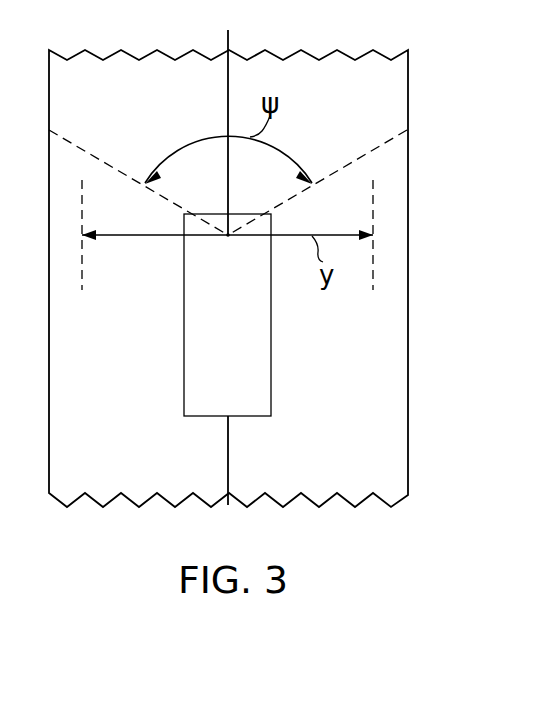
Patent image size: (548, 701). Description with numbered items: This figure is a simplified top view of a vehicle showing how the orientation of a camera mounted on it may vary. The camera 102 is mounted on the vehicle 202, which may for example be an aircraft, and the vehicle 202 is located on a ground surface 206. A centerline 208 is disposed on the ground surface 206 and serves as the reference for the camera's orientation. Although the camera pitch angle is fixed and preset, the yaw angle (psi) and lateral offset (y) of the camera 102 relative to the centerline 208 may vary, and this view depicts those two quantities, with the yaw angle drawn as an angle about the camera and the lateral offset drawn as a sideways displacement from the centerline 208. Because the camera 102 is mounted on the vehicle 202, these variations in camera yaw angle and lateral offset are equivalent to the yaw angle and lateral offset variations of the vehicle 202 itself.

The camera 102 is at (228, 238).
The vehicle 202 is at (262, 372).
The ground surface 206 is at (392, 83).
The centerline 208 is at (227, 75).